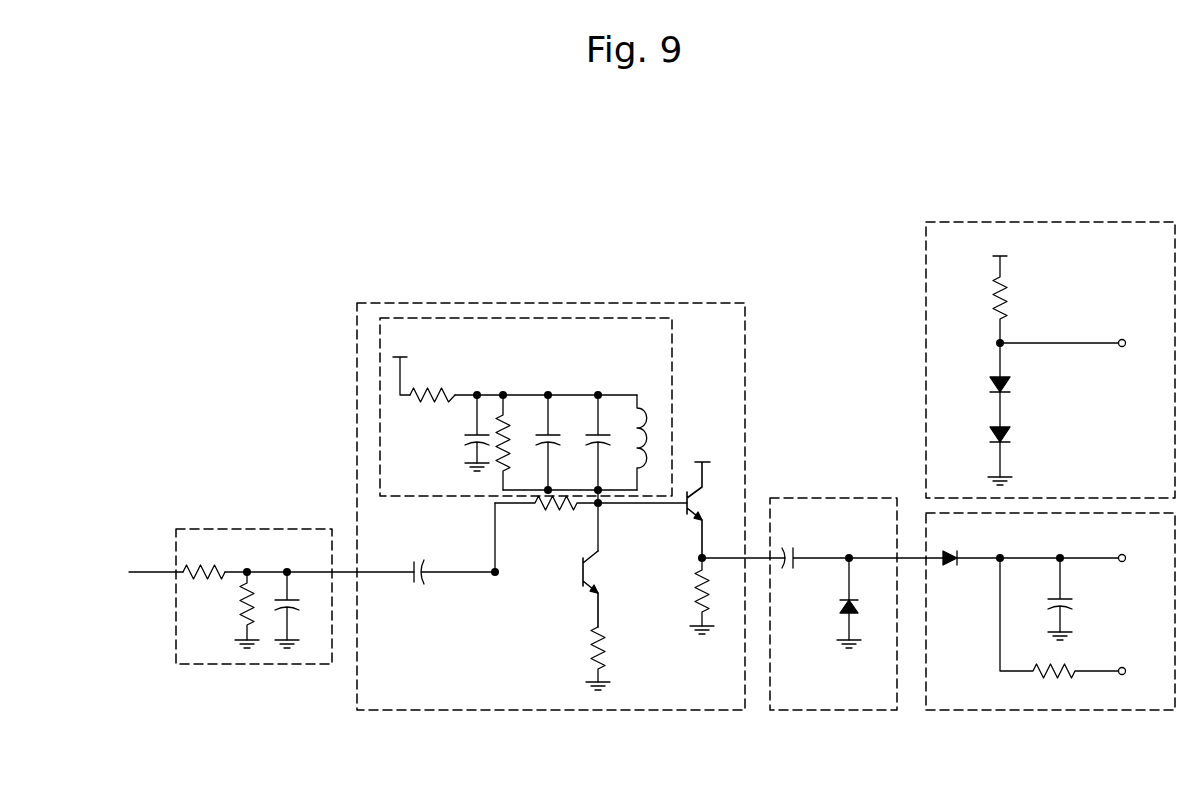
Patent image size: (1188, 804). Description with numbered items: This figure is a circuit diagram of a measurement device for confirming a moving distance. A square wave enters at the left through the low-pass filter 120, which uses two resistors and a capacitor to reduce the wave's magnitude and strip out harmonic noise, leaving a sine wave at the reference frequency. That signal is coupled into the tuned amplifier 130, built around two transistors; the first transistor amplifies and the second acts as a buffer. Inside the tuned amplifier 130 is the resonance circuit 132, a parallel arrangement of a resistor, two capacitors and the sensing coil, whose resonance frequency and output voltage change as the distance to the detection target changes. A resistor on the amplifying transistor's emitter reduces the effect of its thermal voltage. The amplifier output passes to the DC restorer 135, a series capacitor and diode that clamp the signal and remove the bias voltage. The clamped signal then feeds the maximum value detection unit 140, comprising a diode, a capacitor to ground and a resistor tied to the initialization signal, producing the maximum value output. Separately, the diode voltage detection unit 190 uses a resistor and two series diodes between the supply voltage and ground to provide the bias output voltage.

The low-pass filter 120 is at (244, 529).
The tuned amplifier 130 is at (357, 358).
The resonance circuit 132 is at (380, 418).
The DC restorer 135 is at (825, 498).
The maximum value detection unit 140 is at (1042, 710).
The diode voltage detection unit 190 is at (1040, 222).